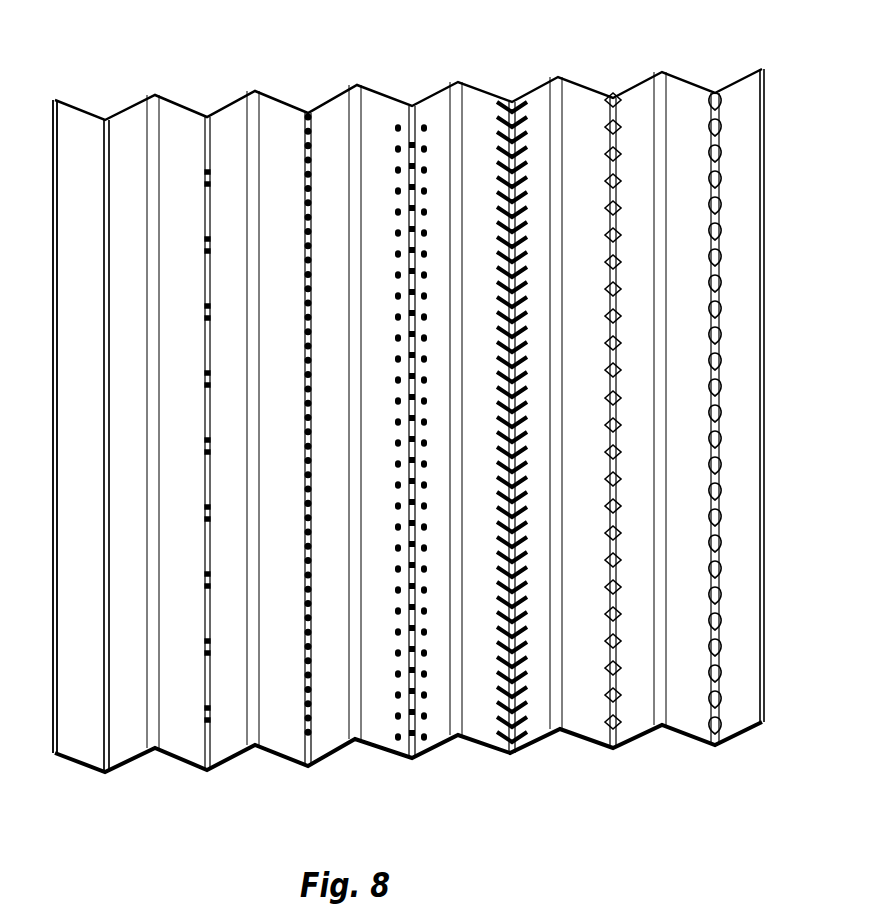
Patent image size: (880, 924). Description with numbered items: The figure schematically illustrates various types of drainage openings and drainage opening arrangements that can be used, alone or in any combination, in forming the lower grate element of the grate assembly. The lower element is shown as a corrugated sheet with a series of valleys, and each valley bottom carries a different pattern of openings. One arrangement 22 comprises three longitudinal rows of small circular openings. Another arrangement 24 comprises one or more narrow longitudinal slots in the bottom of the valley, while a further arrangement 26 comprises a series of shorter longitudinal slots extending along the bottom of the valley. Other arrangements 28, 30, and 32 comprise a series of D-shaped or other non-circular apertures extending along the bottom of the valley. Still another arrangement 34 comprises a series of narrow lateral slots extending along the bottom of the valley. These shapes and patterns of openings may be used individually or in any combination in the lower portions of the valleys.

The opening arrangement 22 is at (412, 104).
The opening arrangement 24 is at (106, 118).
The opening arrangement 26 is at (207, 115).
The opening arrangement 28 is at (308, 111).
The opening arrangement 30 is at (613, 96).
The opening arrangement 32 is at (715, 91).
The opening arrangement 34 is at (512, 100).